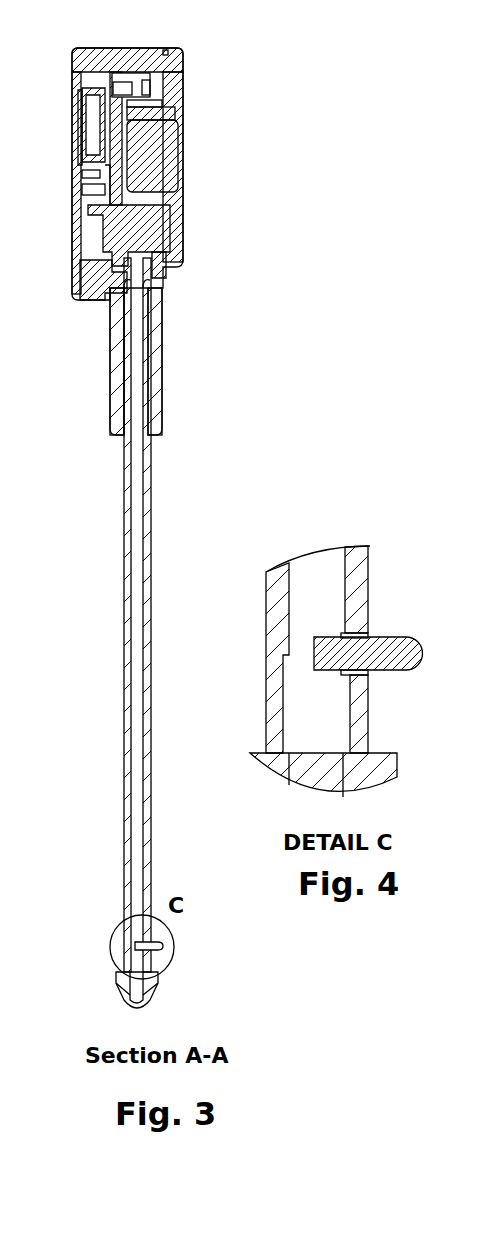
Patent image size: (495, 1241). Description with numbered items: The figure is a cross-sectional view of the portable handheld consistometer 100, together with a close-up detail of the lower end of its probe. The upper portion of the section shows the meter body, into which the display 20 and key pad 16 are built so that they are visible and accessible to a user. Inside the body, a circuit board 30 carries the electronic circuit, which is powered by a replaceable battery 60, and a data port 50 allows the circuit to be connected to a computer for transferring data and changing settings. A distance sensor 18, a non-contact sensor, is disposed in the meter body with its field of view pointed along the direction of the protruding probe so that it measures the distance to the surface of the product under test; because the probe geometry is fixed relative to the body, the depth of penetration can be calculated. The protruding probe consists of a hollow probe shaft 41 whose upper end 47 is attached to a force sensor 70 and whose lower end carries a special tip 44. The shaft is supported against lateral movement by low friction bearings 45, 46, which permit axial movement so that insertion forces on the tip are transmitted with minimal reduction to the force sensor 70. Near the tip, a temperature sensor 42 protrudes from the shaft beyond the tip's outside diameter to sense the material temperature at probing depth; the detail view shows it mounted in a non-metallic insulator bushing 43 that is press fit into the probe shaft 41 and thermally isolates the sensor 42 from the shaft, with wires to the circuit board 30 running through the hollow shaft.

In FIG. 3, the portable handheld consistometer 100 is at (277, 45).
In FIG. 3, the key pad 16 is at (85, 185).
In FIG. 3, the distance sensor 18 is at (97, 282).
In FIG. 3, the display 20 is at (97, 117).
In FIG. 3, the circuit board 30 is at (122, 93).
In FIG. 3, the probe shaft 41 is at (152, 840).
In FIG. 4, the probe shaft 41 is at (368, 563).
In FIG. 3, the temperature sensor 42 is at (163, 947).
In FIG. 4, the temperature sensor 42 is at (417, 637).
In FIG. 4, the insulator bushing 43 is at (362, 628).
In FIG. 3, the special tip 44 is at (158, 982).
In FIG. 3, the low friction bearing 45 is at (153, 422).
In FIG. 3, the low friction bearing 46 is at (152, 307).
In FIG. 3, the upper end of protruding probe 47 is at (168, 252).
In FIG. 3, the data port 50 is at (152, 82).
In FIG. 3, the replaceable battery 60 is at (152, 160).
In FIG. 3, the force sensor 70 is at (138, 230).